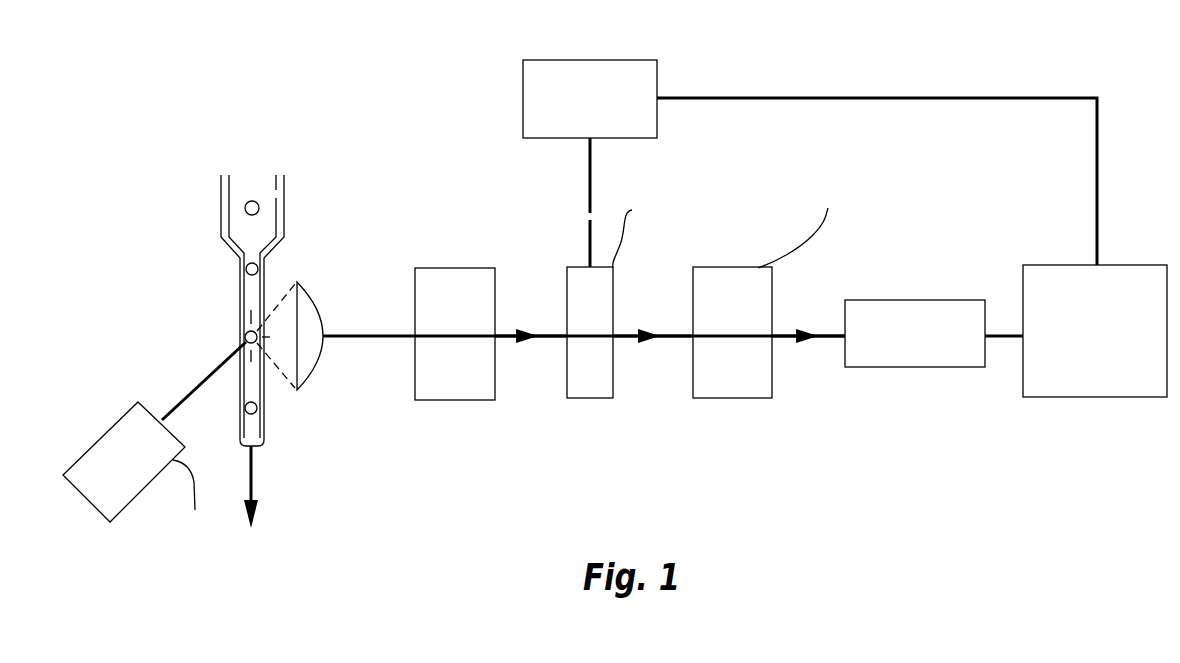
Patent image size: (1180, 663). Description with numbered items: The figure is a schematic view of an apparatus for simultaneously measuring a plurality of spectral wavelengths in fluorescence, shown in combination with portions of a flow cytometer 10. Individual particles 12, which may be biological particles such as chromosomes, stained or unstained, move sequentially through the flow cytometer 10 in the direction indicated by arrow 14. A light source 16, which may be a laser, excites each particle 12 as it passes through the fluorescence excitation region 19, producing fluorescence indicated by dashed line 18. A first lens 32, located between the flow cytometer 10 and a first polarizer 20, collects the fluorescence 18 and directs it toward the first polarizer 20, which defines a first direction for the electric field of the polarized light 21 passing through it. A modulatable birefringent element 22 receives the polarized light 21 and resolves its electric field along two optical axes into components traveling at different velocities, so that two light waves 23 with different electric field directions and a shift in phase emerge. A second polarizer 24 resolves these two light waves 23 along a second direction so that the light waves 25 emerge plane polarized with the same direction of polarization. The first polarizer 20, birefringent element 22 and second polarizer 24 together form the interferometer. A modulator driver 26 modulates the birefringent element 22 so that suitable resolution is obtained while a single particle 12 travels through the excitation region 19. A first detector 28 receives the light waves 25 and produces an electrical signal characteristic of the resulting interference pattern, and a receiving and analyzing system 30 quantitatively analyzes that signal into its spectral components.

The flow cytometer 10 is at (221, 198).
The particles 12 is at (254, 200).
The arrow 14 is at (255, 468).
The light source 16 is at (114, 472).
The fluorescence 18 is at (283, 290).
The fluorescence excitation region 19 is at (241, 338).
The first polarizer 20 is at (460, 400).
The polarized light 21 is at (530, 329).
The modulatable birefringent element 22 is at (590, 398).
The two light waves 23 is at (652, 329).
The second polarizer 24 is at (738, 398).
The light waves 25 is at (808, 328).
The modulator driver 26 is at (577, 124).
The first detector 28 is at (902, 359).
The receiving and analyzing system 30 is at (1082, 359).
The first lens 32 is at (318, 307).